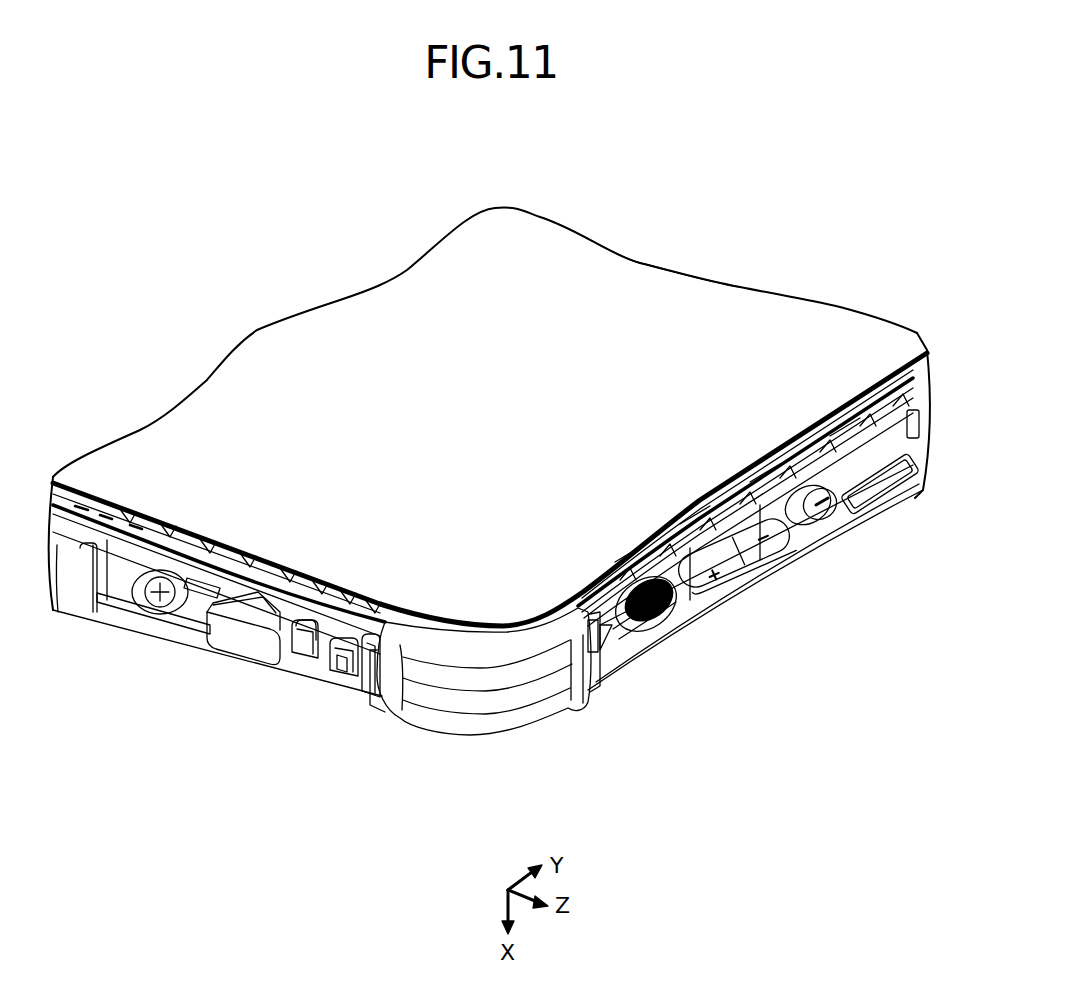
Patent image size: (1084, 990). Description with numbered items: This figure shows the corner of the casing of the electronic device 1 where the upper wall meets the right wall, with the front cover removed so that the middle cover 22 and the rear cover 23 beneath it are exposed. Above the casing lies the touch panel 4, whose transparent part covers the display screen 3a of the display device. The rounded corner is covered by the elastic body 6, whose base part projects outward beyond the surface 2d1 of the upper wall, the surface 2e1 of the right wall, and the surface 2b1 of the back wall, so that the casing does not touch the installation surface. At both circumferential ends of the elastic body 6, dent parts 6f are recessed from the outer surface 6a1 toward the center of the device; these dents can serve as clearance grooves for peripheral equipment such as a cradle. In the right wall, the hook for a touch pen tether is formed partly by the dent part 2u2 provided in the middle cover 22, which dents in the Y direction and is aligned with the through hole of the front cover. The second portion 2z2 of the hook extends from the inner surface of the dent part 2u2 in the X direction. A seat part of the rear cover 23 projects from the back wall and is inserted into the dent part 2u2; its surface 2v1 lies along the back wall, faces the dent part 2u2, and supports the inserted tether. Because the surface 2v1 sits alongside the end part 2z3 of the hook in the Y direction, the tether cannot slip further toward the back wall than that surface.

The electronic device 1 is at (565, 174).
The touch panel 4 is at (313, 347).
The display screen 3a is at (706, 307).
The middle cover 22 is at (296, 622).
The dent part 2u2 is at (282, 608).
The surface of the right wall 2e1 is at (215, 652).
The second portion 2z2 is at (314, 655).
The end part 2z3 is at (334, 660).
The surface 2v1 is at (348, 662).
The elastic body 6 is at (457, 701).
The outer surface 6a1 is at (507, 702).
The dent part 6f is at (397, 689).
The surface of the back wall 2b1 is at (627, 658).
The rear cover 23 is at (852, 522).
The surface of the upper wall 2d1 is at (873, 498).